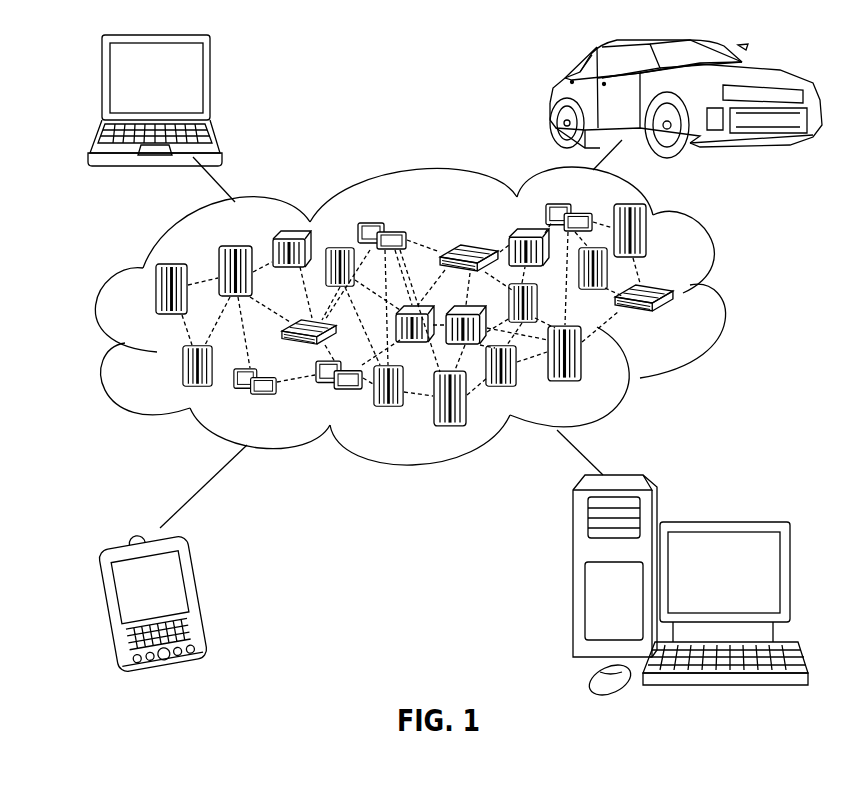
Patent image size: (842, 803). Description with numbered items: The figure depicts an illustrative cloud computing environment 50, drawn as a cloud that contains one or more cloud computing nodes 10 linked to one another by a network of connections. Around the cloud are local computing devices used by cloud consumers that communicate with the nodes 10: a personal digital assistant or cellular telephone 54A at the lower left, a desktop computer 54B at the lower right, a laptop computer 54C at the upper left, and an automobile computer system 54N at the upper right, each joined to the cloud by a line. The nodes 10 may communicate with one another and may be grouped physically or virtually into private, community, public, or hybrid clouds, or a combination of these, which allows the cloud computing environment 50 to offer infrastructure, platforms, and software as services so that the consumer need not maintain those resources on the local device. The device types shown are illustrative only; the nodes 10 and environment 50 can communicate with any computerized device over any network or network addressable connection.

The cloud computing nodes 10 is at (680, 323).
The cloud computing environment 50 is at (721, 299).
The personal digital assistant (PDA) or cellular telephone 54A is at (204, 594).
The desktop computer 54B is at (721, 523).
The laptop computer 54C is at (208, 83).
The automobile computer system 54N is at (549, 96).